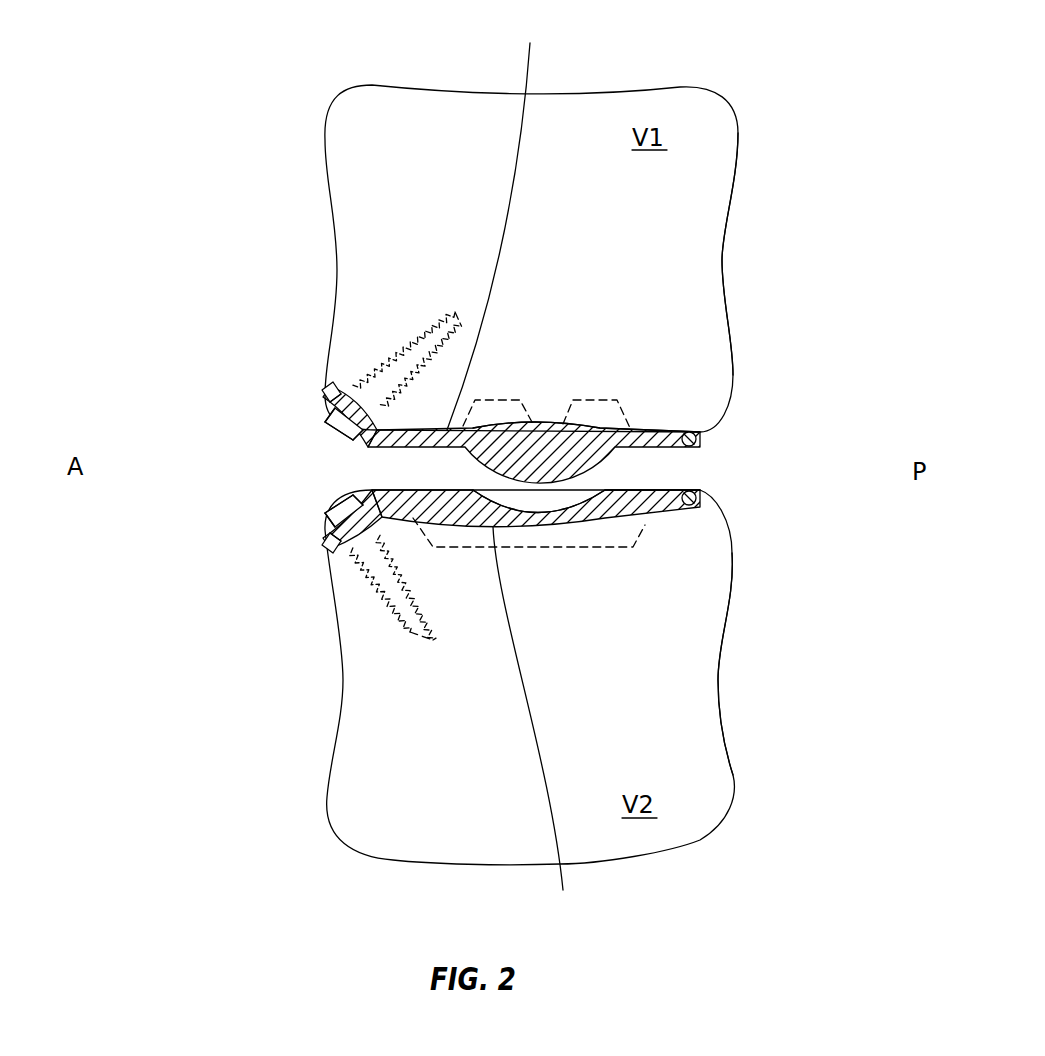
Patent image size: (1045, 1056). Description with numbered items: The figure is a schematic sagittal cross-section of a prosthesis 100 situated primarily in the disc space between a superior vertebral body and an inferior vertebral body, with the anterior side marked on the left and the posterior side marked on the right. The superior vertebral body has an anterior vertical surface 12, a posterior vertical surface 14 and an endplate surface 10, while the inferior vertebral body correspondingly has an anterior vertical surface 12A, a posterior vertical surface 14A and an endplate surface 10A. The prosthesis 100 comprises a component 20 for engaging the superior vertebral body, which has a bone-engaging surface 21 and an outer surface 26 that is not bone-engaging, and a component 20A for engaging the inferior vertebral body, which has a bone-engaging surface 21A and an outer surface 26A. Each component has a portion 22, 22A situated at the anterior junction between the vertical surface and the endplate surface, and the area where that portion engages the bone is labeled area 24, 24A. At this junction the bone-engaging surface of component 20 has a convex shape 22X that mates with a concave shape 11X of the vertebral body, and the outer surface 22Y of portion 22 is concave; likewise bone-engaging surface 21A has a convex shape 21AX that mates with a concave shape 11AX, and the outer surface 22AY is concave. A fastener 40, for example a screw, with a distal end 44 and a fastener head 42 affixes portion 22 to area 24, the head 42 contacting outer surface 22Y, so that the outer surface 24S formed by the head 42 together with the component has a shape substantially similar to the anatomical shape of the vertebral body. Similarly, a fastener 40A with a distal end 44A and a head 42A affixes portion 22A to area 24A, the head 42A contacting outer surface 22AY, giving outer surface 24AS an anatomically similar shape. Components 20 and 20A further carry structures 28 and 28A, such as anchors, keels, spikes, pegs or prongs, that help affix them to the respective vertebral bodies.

The prosthesis 100 is at (506, 490).
The endplate surface 10 is at (702, 442).
The endplate surface 10A is at (702, 510).
The component 20 is at (720, 432).
The component 20A is at (714, 505).
The outer surface 26 is at (672, 446).
The outer surface 26A is at (685, 485).
The structures 28 is at (617, 400).
The structures 28A is at (595, 548).
The portion 22 is at (323, 392).
The portion 22A is at (322, 537).
The convex shape 22X is at (335, 386).
The outer surface 22Y is at (325, 415).
The outer surface 22AY is at (322, 528).
The concave shape 11X is at (327, 398).
The concave shape 11AX is at (327, 540).
The area 24 is at (290, 423).
The area 24A is at (292, 513).
The outer surface 24S is at (313, 425).
The outer surface 24AS is at (313, 512).
The fastener head 42 is at (340, 437).
The fastener head 42A is at (340, 500).
The fastener 40 is at (362, 352).
The fastener 40A is at (367, 602).
The distal end 44 is at (453, 317).
The distal end 44A is at (407, 627).
The bone-engaging surface 21 is at (494, 222).
The bone-engaging surface 21A is at (539, 726).
The convex shape 21AX is at (330, 548).
The anterior vertical surface 12 is at (330, 193).
The anterior vertical surface 12A is at (340, 720).
The posterior vertical surface 14 is at (725, 240).
The posterior vertical surface 14A is at (730, 717).